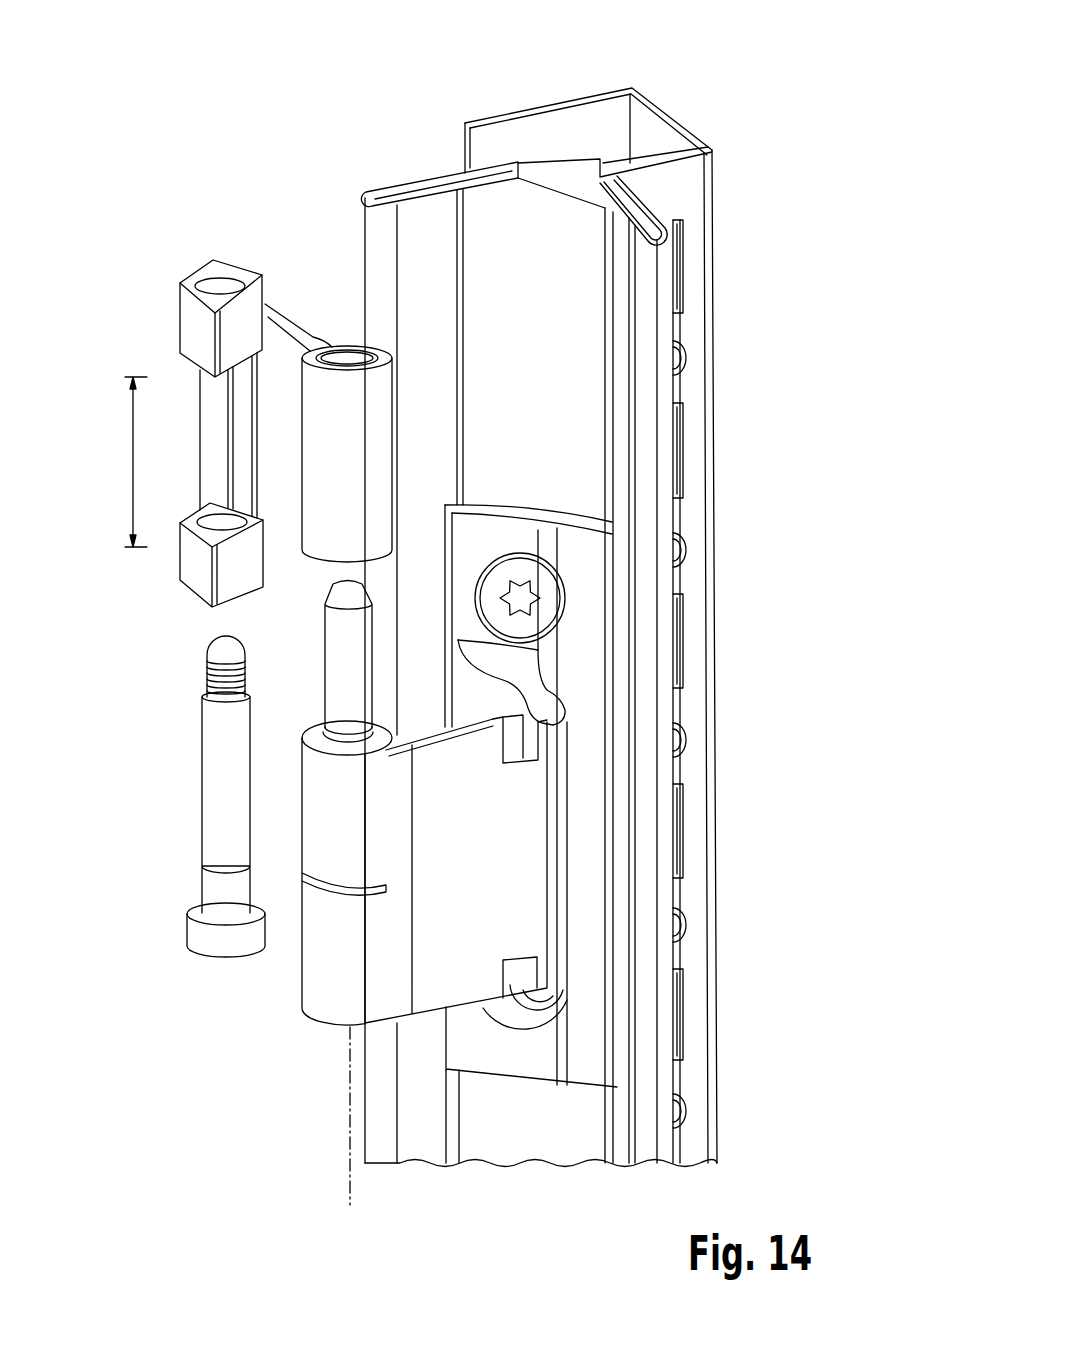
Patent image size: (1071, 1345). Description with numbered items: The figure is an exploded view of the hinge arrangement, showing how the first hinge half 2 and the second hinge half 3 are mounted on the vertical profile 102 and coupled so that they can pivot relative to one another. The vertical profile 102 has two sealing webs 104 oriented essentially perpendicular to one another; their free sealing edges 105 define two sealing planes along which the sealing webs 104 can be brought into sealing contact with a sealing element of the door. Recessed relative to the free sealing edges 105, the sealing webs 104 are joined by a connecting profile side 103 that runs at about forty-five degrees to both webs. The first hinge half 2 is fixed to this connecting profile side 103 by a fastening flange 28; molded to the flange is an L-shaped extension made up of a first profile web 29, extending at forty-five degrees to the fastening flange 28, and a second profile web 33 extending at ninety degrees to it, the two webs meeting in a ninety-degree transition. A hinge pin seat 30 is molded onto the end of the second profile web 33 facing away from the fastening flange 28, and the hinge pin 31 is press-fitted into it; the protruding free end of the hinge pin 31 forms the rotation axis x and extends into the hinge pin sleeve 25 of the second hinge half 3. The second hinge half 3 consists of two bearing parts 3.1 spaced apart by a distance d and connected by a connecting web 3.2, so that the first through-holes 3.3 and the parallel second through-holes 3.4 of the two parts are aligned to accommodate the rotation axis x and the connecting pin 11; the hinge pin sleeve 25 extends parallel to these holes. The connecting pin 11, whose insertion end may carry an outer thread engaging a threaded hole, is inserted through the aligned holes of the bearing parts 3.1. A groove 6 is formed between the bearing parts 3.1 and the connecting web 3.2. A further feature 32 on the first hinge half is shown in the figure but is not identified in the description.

The vertical profile 102 is at (656, 68).
The connecting profile side 103 is at (551, 266).
The sealing web 104 is at (428, 182).
The free sealing edge 105 is at (362, 222).
The second hinge half 3 is at (153, 225).
The bearing part 3.1 is at (193, 327).
The connecting web 3.2 is at (272, 428).
The first through-hole 3.3 is at (350, 362).
The second through-hole 3.4 is at (217, 290).
The groove 6 is at (270, 304).
The hinge pin sleeve 25 is at (330, 540).
The connecting pin 11 is at (218, 792).
The first hinge half 2 is at (335, 1080).
The hinge pin seat 30 is at (345, 808).
The hinge pin 31 is at (343, 676).
The second profile web 33 is at (498, 880).
The fastening flange 28 is at (572, 550).
The first profile web 29 is at (540, 697).
The receiving slot 32 is at (557, 730).
The distance d is at (133, 463).
The rotation axis x is at (348, 1190).